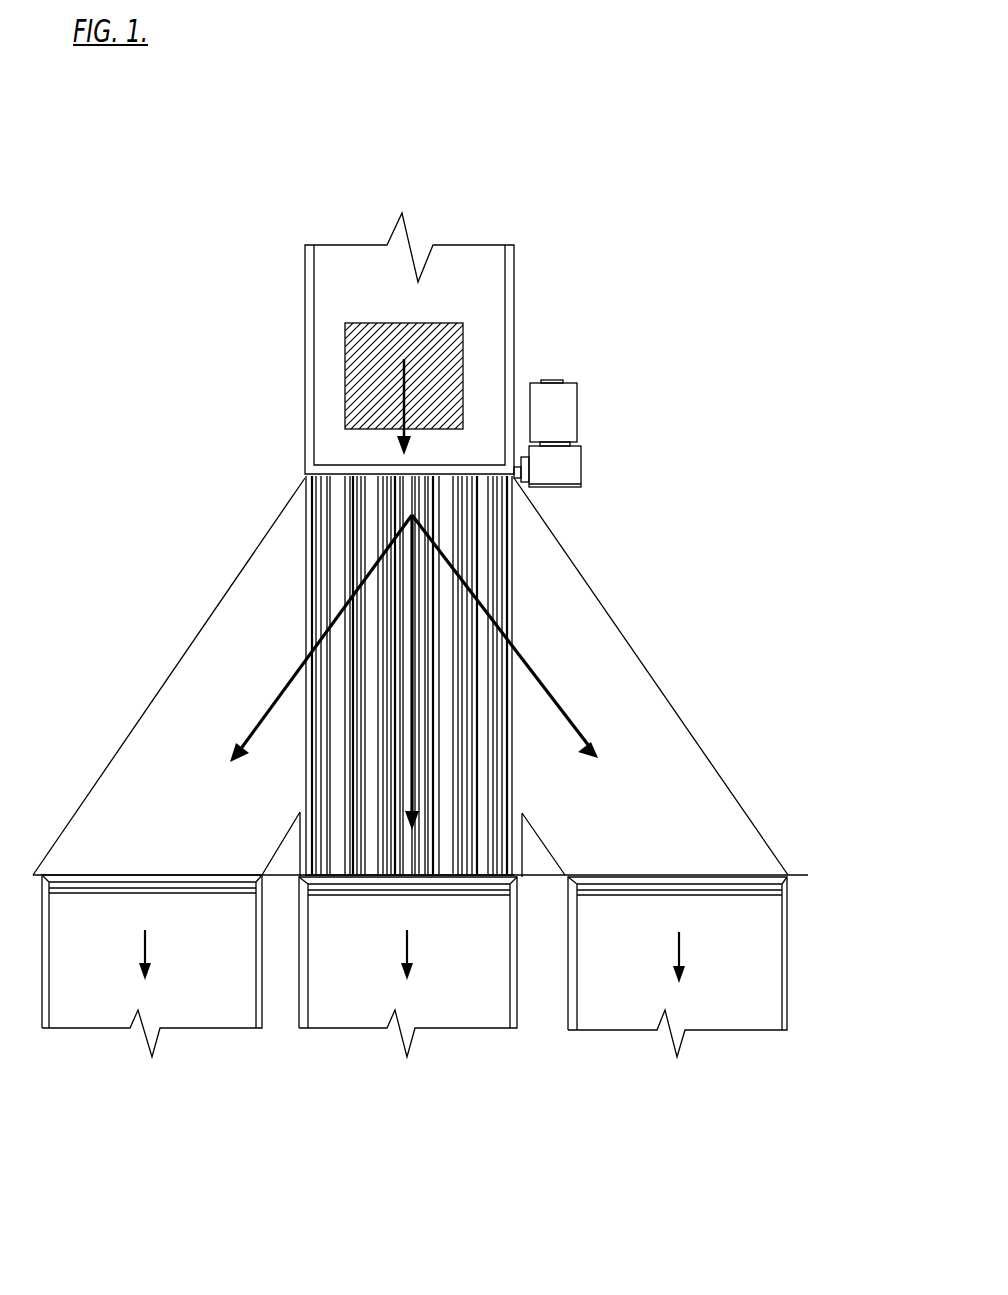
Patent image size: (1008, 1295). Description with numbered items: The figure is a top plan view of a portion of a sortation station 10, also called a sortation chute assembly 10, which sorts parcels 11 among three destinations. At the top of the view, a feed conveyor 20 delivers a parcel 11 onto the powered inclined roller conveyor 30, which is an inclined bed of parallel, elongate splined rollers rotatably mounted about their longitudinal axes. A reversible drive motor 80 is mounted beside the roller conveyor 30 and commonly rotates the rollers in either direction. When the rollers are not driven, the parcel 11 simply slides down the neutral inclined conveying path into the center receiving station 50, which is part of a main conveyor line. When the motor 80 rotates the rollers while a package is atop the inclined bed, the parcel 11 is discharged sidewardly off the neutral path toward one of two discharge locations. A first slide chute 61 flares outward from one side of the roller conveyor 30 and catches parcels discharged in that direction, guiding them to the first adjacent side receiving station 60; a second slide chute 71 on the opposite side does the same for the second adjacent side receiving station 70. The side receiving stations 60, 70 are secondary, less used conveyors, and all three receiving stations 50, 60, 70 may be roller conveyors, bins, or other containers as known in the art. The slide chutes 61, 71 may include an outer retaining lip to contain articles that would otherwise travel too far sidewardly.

The sortation chute assembly 10 is at (484, 130).
The feed conveyor 20 is at (318, 288).
The parcel 11 is at (447, 370).
The reversible drive motor 80 is at (570, 462).
The powered inclined roller conveyor 30 is at (298, 508).
The first slide chute 61 is at (163, 753).
The second slide chute 71 is at (665, 778).
The first adjacent side receiving station 60 is at (170, 1015).
The center receiving station 50 is at (366, 997).
The second adjacent side receiving station 70 is at (618, 993).